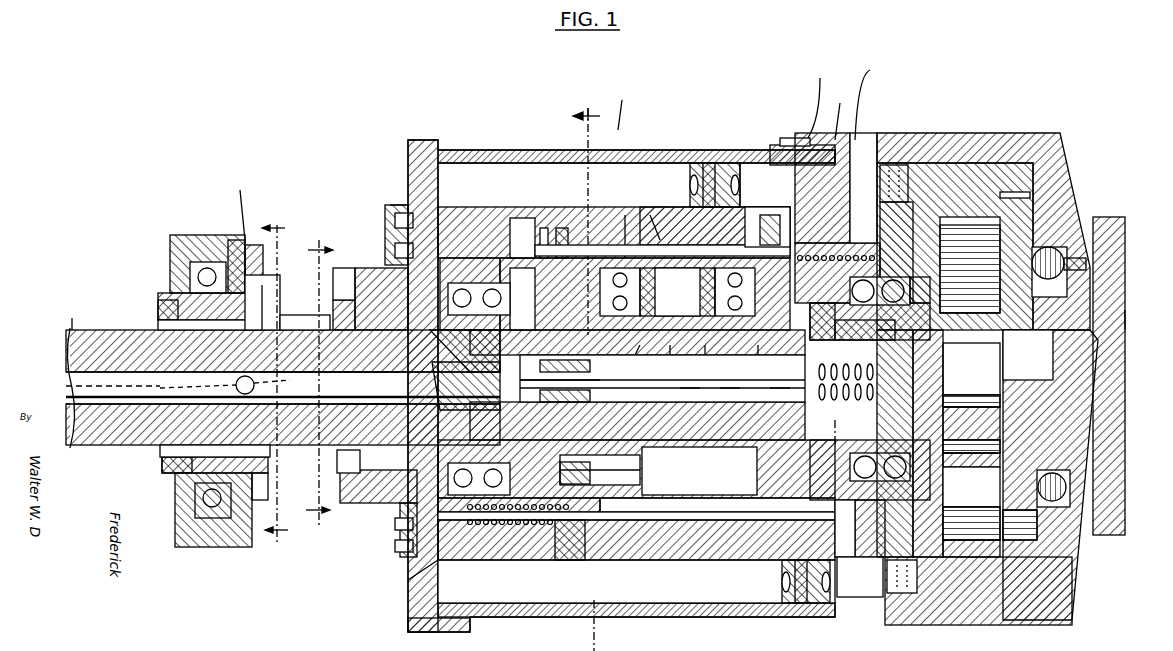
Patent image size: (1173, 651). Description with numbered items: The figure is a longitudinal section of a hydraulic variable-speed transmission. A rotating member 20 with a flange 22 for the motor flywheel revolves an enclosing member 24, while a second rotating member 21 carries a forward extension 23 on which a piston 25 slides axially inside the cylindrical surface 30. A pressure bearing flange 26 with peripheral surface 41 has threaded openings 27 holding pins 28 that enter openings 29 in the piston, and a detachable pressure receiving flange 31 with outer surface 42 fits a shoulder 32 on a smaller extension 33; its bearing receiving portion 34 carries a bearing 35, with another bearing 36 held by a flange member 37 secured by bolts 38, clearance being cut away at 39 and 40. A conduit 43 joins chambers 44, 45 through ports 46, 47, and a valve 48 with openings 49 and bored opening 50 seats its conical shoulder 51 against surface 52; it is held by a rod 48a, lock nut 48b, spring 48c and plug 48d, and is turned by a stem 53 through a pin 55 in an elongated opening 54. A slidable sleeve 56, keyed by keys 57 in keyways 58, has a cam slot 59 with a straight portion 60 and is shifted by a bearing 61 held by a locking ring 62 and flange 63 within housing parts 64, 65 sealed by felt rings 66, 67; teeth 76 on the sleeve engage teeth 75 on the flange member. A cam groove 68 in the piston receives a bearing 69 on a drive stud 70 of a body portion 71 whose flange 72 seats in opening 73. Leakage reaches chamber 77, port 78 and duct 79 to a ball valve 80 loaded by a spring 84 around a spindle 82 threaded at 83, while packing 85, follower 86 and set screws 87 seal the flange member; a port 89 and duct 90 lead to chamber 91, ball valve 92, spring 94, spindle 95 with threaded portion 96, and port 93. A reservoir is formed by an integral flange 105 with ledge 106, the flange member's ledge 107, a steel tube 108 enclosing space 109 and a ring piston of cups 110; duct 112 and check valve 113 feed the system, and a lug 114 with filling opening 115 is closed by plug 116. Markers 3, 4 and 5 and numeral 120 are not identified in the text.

The section line 3- 3 is at (581, 106).
The section line 4- 4 is at (547, 379).
The section line 5- 5 is at (318, 376).
The rotating member 20 is at (1128, 340).
The rotating member 21 is at (72, 330).
The flange 22 is at (1125, 235).
The extension portion 23 is at (670, 360).
The enclosing member 24 is at (598, 122).
The piston 25 is at (705, 360).
The pressure bearing portion 26 is at (540, 318).
The threaded openings 27 is at (547, 228).
The pins 28 is at (563, 228).
The openings 29 is at (640, 458).
The cylindrical surface 30 is at (760, 210).
The detachable pressure receiving flange 31 is at (762, 357).
The shoulder 32 is at (821, 321).
The smaller extension 33 is at (865, 326).
The bearing receiving portion 34 is at (922, 298).
The bearing 35 is at (908, 295).
The bearing member 36 is at (392, 250).
The flange member 37 is at (406, 170).
The bolts 38 is at (398, 218).
The cut away portion 39 is at (1028, 355).
The cut away portion 40 is at (370, 282).
The peripheral surface 41 is at (522, 222).
The outer peripheral surface 42 is at (840, 218).
The conduit 43 is at (689, 393).
The chamber 44 is at (592, 215).
The chamber 45 is at (720, 520).
The ports 46 is at (631, 360).
The ports 47 is at (805, 345).
The valve 48 is at (637, 397).
The rod 48a is at (725, 397).
The lock nut 48b is at (773, 397).
The spring 48c is at (938, 387).
The plug 48d is at (971, 463).
The openings 49 is at (570, 350).
The bored opening 50 is at (600, 394).
The conical shoulder 51 is at (466, 386).
The conical surface 52 is at (448, 357).
The valve stem 53 is at (90, 380).
The elongated opening 54 is at (318, 458).
The pin 55 is at (330, 380).
The slidable sleeve 56 is at (158, 324).
The keys 57 is at (262, 300).
The keyways 58 is at (295, 318).
The cam slot 59 is at (210, 398).
The slot portion 60 is at (135, 462).
The bearing 61 is at (200, 262).
The threaded locking ring 62 is at (160, 305).
The flange 63 is at (257, 266).
The housing member 64 is at (175, 238).
The housing part 65 is at (236, 242).
The felt dust ring 66 is at (165, 295).
The felt dust ring 67 is at (238, 207).
The groove 68 is at (636, 469).
The bearing 69 is at (650, 288).
The drive stud 70 is at (697, 292).
The body portion 71 is at (666, 227).
The flange 72 is at (625, 220).
The opening 73 is at (660, 207).
The teeth 75 is at (340, 300).
The teeth 76 is at (268, 285).
The chamber 77 is at (470, 260).
The port 78 is at (495, 207).
The duct 79 is at (722, 163).
The ball valve 80 is at (772, 215).
The spindle 82 is at (895, 245).
The threaded opening 83 is at (935, 136).
The spring 84 is at (862, 160).
The packing member 85 is at (398, 535).
The adjustable follower 86 is at (345, 268).
The set screws 87 is at (370, 405).
The port 89 is at (884, 580).
The duct 90 is at (675, 520).
The chamber 91 is at (500, 525).
The ball valve 92 is at (572, 562).
The port 93 is at (600, 525).
The spring 94 is at (520, 530).
The spindle 95 is at (540, 570).
The screw threaded portion 96 is at (412, 575).
The integral flange 105 is at (800, 138).
The overhanging ledge 106 is at (800, 145).
The overhanging ledge 107 is at (424, 142).
The steel tube 108 is at (638, 105).
The space 109 is at (510, 152).
The cups 110 is at (705, 163).
The duct 112 is at (870, 560).
The check valve 113 is at (794, 581).
The lug 114 is at (846, 111).
The opening 115 is at (880, 98).
The plug 116 is at (824, 98).
The cap 120 is at (1036, 457).